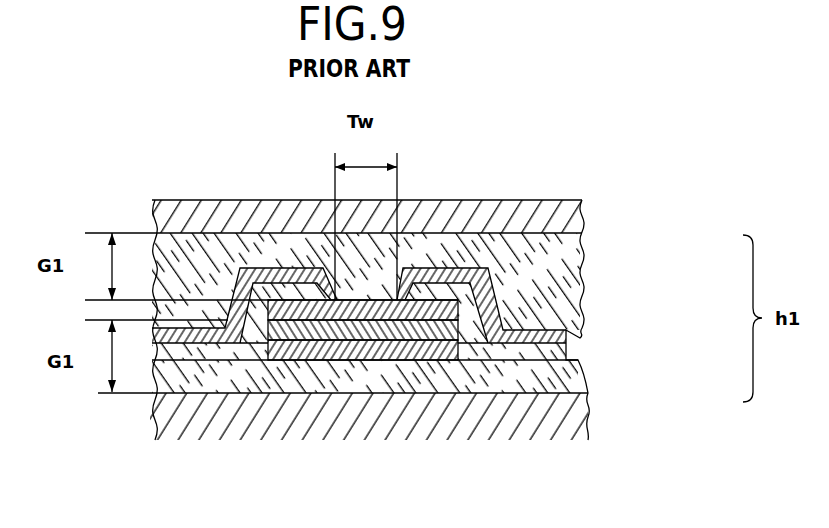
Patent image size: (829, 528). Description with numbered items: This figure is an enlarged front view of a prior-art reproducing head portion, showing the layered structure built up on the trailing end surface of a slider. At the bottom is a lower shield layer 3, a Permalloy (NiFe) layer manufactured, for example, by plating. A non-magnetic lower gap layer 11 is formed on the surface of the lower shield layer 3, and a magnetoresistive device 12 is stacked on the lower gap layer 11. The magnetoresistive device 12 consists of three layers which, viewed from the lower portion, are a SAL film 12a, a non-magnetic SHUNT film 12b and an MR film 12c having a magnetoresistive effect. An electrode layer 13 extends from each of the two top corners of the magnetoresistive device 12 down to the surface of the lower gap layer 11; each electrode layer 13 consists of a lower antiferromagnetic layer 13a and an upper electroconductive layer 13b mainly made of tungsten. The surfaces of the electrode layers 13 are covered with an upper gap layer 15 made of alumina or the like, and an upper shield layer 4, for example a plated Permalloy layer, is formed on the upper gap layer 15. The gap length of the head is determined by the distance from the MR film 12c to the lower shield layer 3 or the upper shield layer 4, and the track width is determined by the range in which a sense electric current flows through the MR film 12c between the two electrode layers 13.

The lower shield layer 3 is at (565, 420).
The upper shield layer 4 is at (575, 214).
The lower gap layer 11 is at (553, 380).
The magnetoresistive device 12 is at (343, 402).
The SAL film 12a is at (313, 350).
The non-magnetic SHUNT film 12b is at (378, 345).
The MR film 12c is at (413, 312).
The electrode layer 13 is at (435, 330).
The antiferromagnetic layer 13a is at (567, 353).
The electroconductive layer 13b is at (565, 337).
The upper gap layer 15 is at (447, 243).